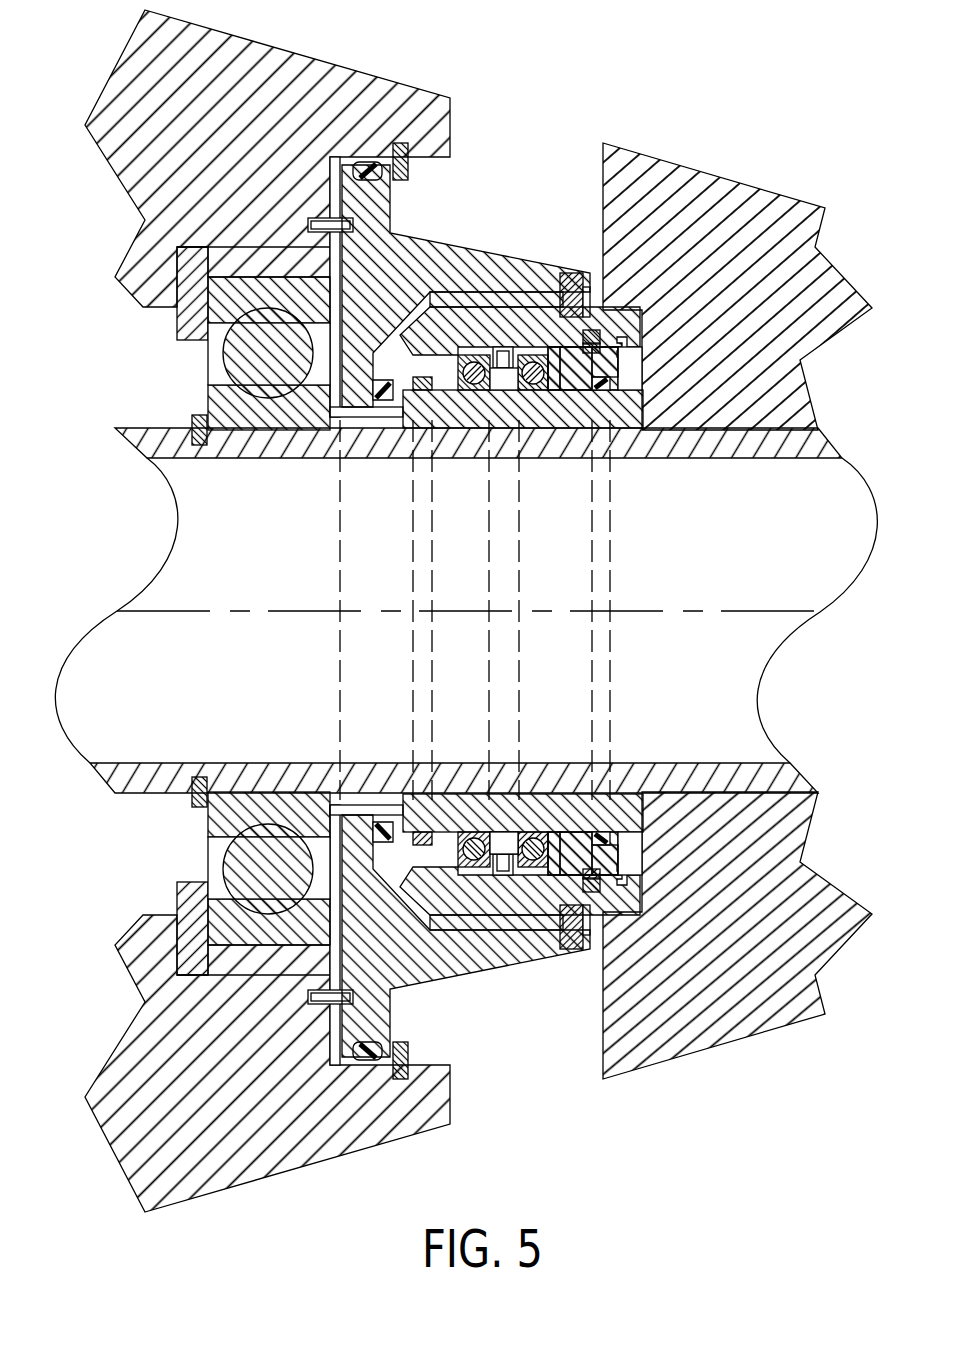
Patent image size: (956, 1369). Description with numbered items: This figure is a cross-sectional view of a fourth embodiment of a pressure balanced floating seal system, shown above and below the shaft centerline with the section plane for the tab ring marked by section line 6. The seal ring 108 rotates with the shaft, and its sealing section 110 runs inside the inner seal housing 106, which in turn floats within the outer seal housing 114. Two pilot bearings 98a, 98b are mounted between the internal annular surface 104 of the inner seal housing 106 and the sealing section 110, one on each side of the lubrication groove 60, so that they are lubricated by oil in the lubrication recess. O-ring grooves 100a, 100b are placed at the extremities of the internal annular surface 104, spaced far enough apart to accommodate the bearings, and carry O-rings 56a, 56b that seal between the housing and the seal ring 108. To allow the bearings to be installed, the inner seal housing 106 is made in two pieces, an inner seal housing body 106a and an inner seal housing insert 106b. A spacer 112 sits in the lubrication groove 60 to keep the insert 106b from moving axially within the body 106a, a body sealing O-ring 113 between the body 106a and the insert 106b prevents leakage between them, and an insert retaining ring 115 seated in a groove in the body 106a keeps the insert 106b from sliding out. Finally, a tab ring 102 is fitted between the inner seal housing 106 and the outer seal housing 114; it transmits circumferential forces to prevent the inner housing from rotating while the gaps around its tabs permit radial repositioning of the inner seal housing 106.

The section line 6- 6 is at (573, 260).
The O-ring 56a is at (420, 392).
The O-ring 56b is at (603, 392).
The lubrication groove 60 is at (498, 845).
The pilot bearing 98a is at (472, 392).
The pilot bearing 98b is at (535, 392).
The O-ring groove 100a is at (383, 405).
The O-ring groove 100b is at (625, 385).
The tab ring 102 is at (603, 277).
The internal annular surface 104 is at (590, 392).
The inner seal housing 106 is at (477, 307).
The inner seal housing body 106a is at (437, 343).
The inner seal housing insert 106b is at (610, 400).
The seal ring 108 is at (505, 392).
The sealing section 110 is at (558, 392).
The spacer 112 is at (507, 347).
The body sealing O-ring 113 is at (617, 343).
The outer seal housing 114 is at (412, 277).
The insert retaining ring 115 is at (627, 340).